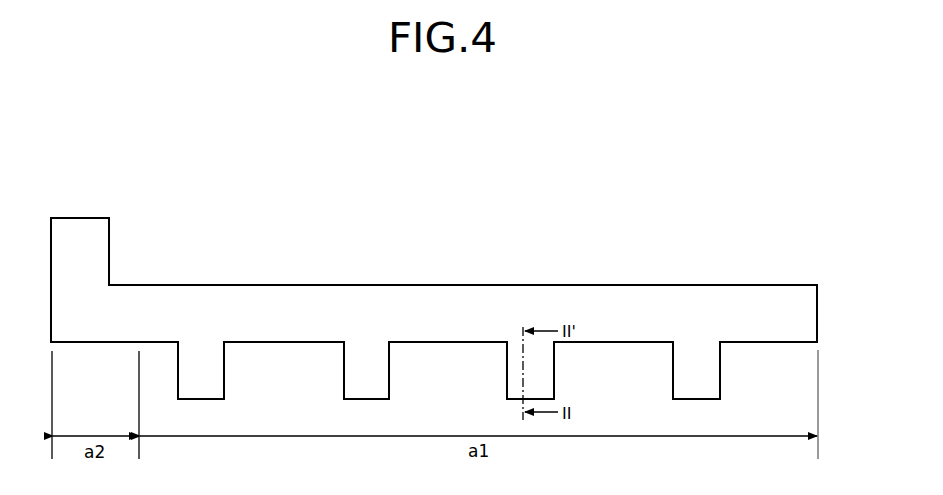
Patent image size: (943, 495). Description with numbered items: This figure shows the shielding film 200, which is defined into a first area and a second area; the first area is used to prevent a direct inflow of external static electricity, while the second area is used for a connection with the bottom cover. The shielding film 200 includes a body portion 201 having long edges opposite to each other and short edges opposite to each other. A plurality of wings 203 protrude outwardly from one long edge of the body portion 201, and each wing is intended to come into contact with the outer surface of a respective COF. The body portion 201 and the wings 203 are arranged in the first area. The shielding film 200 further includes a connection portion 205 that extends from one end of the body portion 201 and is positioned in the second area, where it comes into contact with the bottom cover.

The shielding film 200 is at (434, 253).
The body portion 201 is at (742, 295).
The wings 203 is at (720, 374).
The connection portion 205 is at (109, 248).